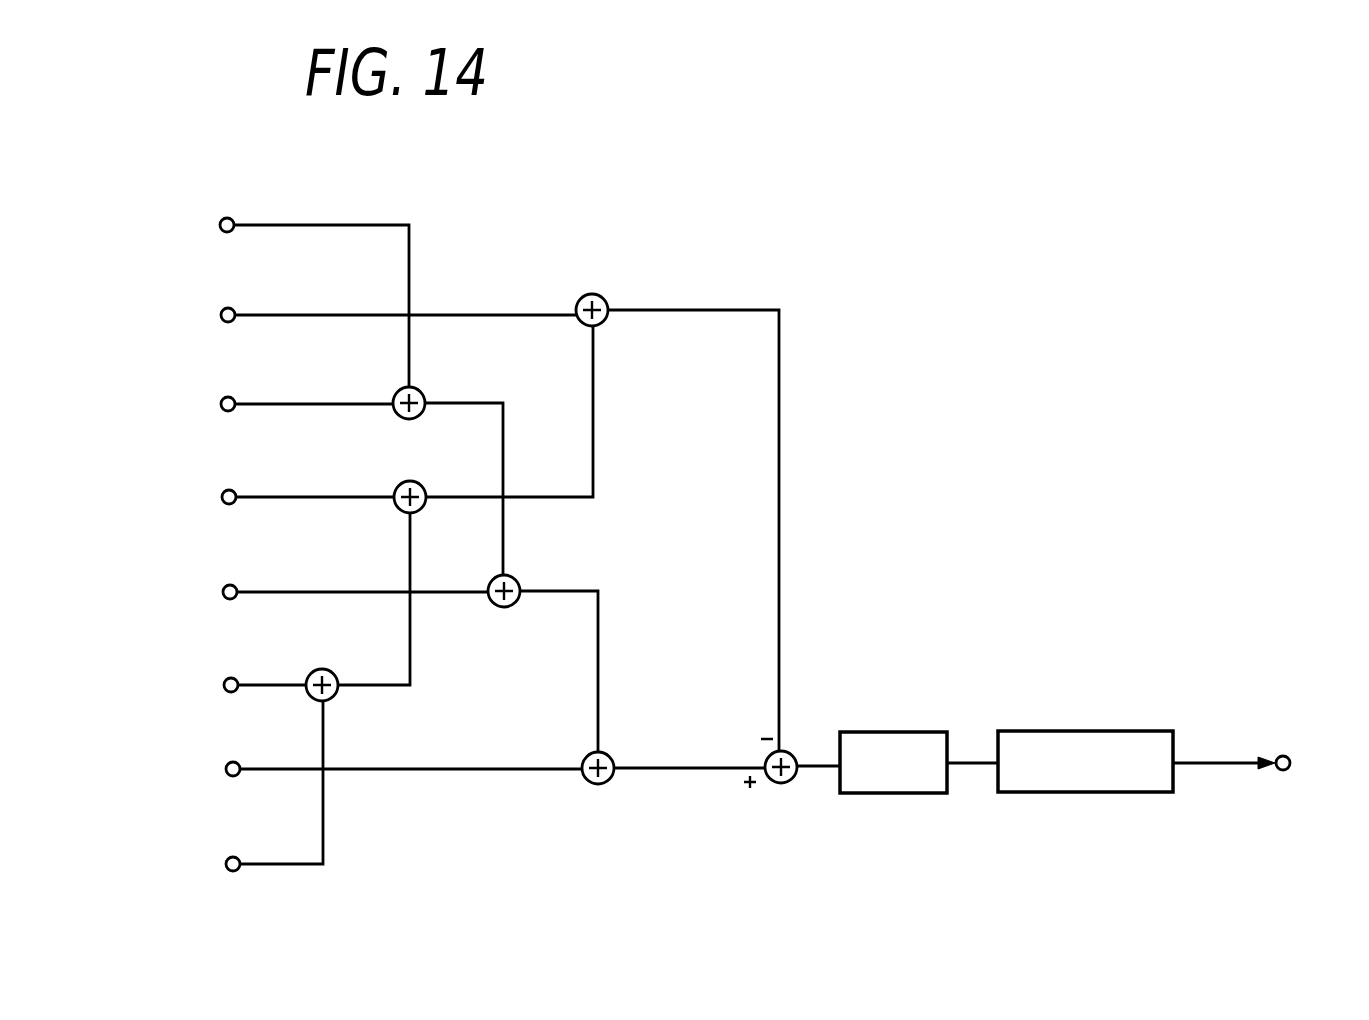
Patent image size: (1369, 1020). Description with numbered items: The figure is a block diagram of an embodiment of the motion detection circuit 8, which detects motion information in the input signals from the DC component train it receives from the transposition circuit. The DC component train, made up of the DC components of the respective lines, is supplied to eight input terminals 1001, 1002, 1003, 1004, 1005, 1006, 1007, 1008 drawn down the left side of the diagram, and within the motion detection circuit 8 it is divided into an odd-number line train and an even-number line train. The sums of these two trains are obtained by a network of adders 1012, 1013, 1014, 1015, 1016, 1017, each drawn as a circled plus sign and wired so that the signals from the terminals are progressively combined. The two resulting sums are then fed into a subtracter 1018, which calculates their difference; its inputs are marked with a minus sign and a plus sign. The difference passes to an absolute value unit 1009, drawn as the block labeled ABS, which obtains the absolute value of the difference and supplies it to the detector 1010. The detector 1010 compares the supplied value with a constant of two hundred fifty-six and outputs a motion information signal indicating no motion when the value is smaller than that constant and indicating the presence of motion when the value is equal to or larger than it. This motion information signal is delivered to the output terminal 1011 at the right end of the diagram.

The motion detection circuit 8 is at (807, 204).
The terminal 1001 is at (221, 222).
The terminal 1002 is at (222, 312).
The terminal 1003 is at (222, 400).
The terminal 1004 is at (223, 494).
The terminal 1005 is at (224, 588).
The terminal 1006 is at (225, 681).
The terminal 1007 is at (227, 765).
The terminal 1008 is at (227, 860).
The absolute value unit 1009 is at (862, 732).
The detector 1010 is at (1110, 731).
The terminal 1011 is at (1290, 757).
The adder 1012 is at (603, 298).
The adder 1013 is at (421, 392).
The adder 1014 is at (400, 484).
The adder 1015 is at (516, 580).
The adder 1016 is at (334, 673).
The adder 1017 is at (611, 757).
The subtracter 1018 is at (790, 781).